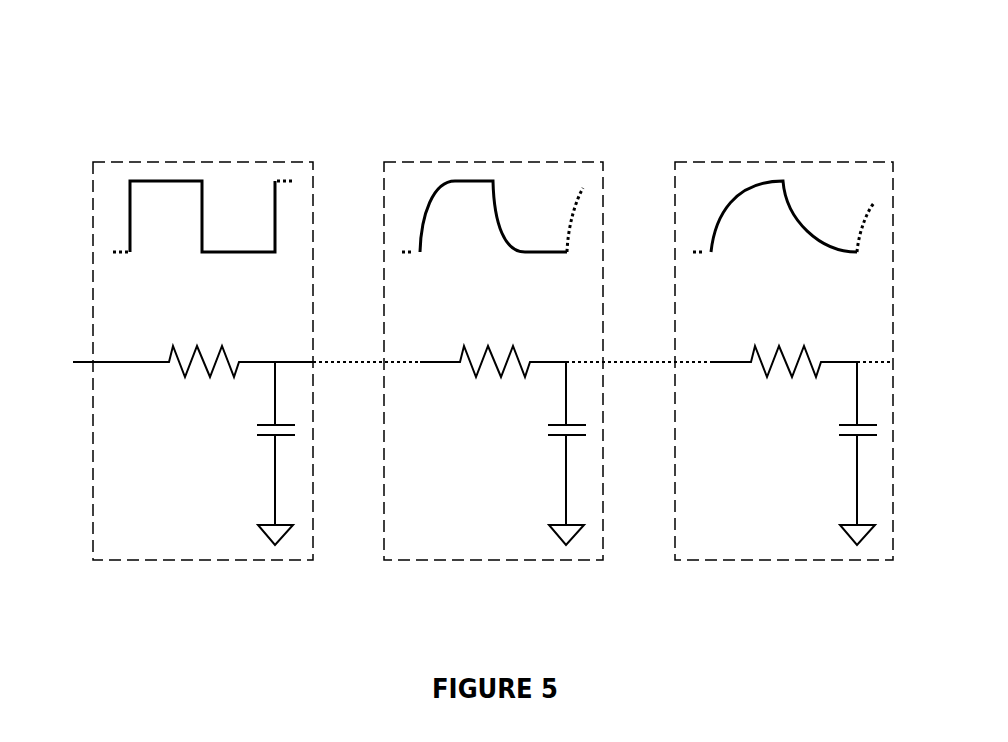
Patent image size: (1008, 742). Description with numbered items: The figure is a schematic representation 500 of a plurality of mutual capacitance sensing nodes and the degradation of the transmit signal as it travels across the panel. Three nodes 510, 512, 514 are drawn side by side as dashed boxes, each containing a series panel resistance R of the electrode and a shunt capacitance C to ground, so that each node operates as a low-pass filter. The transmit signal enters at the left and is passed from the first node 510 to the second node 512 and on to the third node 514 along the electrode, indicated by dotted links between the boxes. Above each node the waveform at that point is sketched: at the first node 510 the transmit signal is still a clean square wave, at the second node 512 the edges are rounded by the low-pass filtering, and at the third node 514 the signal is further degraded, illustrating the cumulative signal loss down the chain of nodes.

The schematic representation of mutual capacitance sensing nodes 500 is at (420, 54).
The node 510 is at (203, 162).
The node 512 is at (493, 162).
The node 514 is at (783, 162).